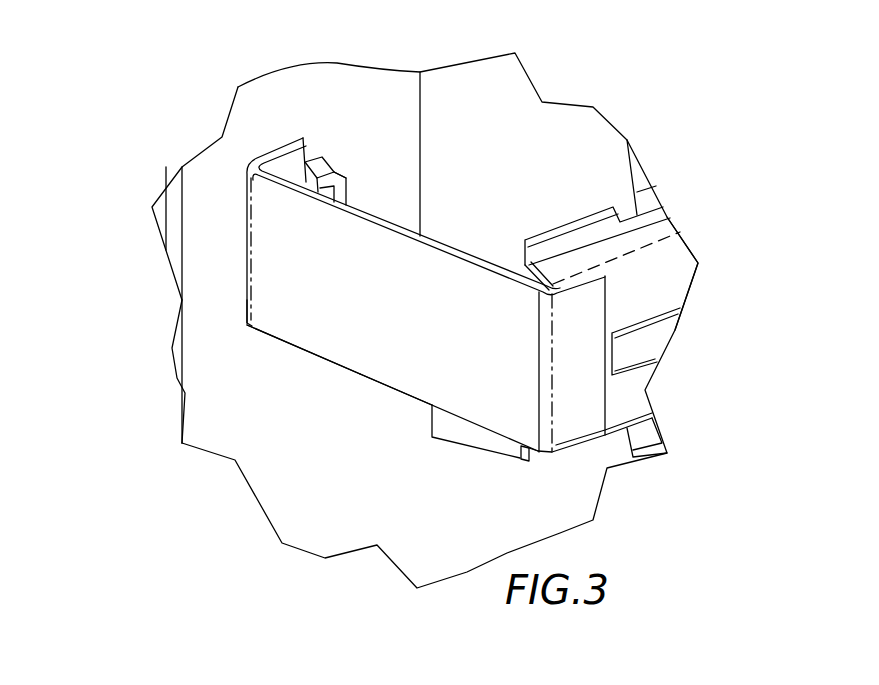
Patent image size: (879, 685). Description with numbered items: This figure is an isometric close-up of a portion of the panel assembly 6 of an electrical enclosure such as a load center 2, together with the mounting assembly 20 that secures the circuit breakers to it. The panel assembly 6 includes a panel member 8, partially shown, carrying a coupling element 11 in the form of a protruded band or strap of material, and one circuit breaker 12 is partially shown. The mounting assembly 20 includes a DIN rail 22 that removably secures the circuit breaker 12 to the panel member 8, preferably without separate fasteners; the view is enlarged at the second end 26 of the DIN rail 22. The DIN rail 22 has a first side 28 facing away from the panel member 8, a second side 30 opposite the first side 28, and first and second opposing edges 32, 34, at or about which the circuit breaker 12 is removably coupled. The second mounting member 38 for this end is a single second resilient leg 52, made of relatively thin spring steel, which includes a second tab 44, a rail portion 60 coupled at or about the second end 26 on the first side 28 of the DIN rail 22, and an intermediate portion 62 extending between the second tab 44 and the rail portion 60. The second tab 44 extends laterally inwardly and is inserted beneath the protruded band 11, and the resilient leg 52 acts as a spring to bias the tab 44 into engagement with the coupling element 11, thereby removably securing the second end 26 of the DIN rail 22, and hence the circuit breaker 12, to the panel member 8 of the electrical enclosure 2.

The load center 2 is at (608, 542).
The panel assembly 6 is at (168, 389).
The panel member 8 is at (295, 83).
The coupling element 11 is at (320, 188).
The circuit breaker 12 is at (570, 127).
The mounting assembly 20 is at (203, 115).
The DIN rail 22 is at (641, 407).
The second end 26 is at (556, 208).
The first side 28 is at (670, 272).
The second side 30 is at (547, 290).
The first edge 32 is at (530, 237).
The second edge 34 is at (528, 457).
The second mounting member 38 is at (300, 370).
The second tab 44 is at (336, 177).
The second resilient leg 52 is at (278, 316).
The rail portion 60 is at (570, 438).
The intermediate portion 62 is at (397, 386).